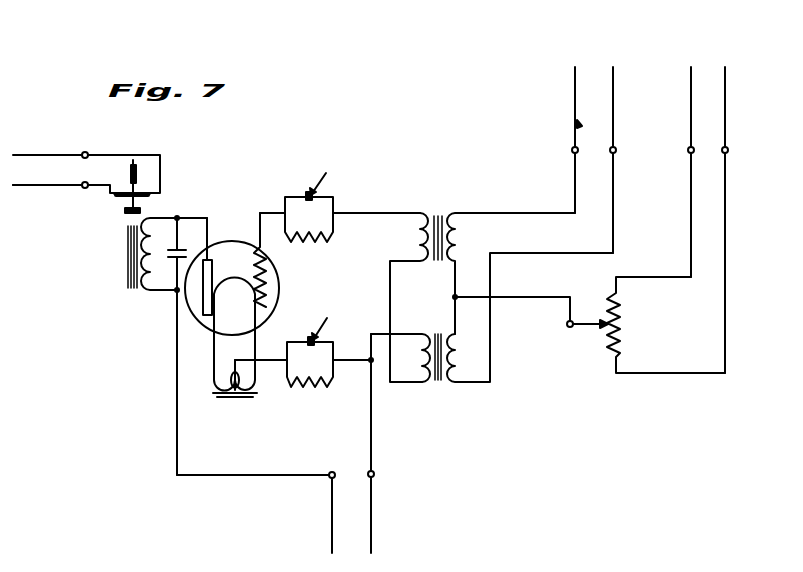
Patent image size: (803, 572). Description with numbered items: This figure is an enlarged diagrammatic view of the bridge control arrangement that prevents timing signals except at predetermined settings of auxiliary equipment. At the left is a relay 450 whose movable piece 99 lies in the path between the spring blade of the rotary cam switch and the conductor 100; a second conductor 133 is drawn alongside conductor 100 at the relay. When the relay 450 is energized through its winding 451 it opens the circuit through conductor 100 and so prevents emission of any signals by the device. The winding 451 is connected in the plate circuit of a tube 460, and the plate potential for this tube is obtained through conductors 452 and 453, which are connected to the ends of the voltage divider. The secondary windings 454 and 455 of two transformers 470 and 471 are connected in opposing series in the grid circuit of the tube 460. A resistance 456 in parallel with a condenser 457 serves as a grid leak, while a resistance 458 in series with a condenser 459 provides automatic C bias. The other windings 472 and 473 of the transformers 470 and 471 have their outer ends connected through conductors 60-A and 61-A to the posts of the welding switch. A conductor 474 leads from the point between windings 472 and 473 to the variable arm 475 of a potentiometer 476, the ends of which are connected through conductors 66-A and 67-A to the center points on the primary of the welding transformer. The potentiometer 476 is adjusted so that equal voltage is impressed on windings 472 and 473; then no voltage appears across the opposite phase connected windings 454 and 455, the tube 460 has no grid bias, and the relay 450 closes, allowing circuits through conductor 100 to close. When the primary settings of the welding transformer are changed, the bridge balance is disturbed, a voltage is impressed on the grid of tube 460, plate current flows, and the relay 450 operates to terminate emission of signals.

The conductor 100 is at (62, 154).
The supply conductor 133 is at (47, 187).
The movable piece 99 is at (150, 198).
The relay 450 is at (126, 270).
The winding 451 is at (150, 285).
The tube 460 is at (230, 238).
The resistance 456 is at (315, 242).
The condenser 457 is at (333, 182).
The resistance 458 is at (310, 387).
The condenser 459 is at (334, 327).
The conductor 452 is at (224, 475).
The conductor 453 is at (372, 434).
The transformer 470 is at (438, 216).
The transformer 471 is at (438, 382).
The secondary winding 454 is at (417, 233).
The secondary winding 455 is at (432, 334).
The winding 472 is at (460, 240).
The winding 473 is at (460, 370).
The conductor 474 is at (522, 297).
The variable arm 475 is at (590, 328).
The potentiometer 476 is at (622, 335).
The conductor 61-A is at (575, 84).
The conductor 60-A is at (613, 92).
The conductor 66-A is at (691, 98).
The conductor 67-A is at (725, 95).